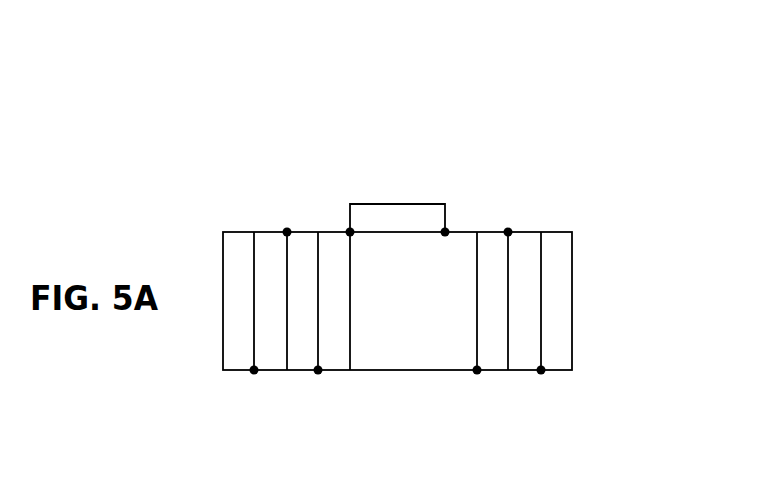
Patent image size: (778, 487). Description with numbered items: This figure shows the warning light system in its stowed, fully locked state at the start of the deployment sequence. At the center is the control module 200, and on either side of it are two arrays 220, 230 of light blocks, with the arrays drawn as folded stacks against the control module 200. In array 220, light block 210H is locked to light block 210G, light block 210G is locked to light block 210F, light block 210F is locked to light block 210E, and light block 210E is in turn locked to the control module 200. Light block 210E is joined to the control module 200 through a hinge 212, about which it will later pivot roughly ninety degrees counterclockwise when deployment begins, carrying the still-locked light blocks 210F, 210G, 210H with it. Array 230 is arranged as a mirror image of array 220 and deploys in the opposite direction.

The control module 200 is at (396, 372).
The hinge 212 is at (445, 232).
The array 220 is at (648, 97).
The array 230 is at (346, 198).
The light block 210E is at (462, 232).
The light block 210F is at (490, 232).
The light block 210G is at (523, 232).
The light block 210H is at (556, 232).